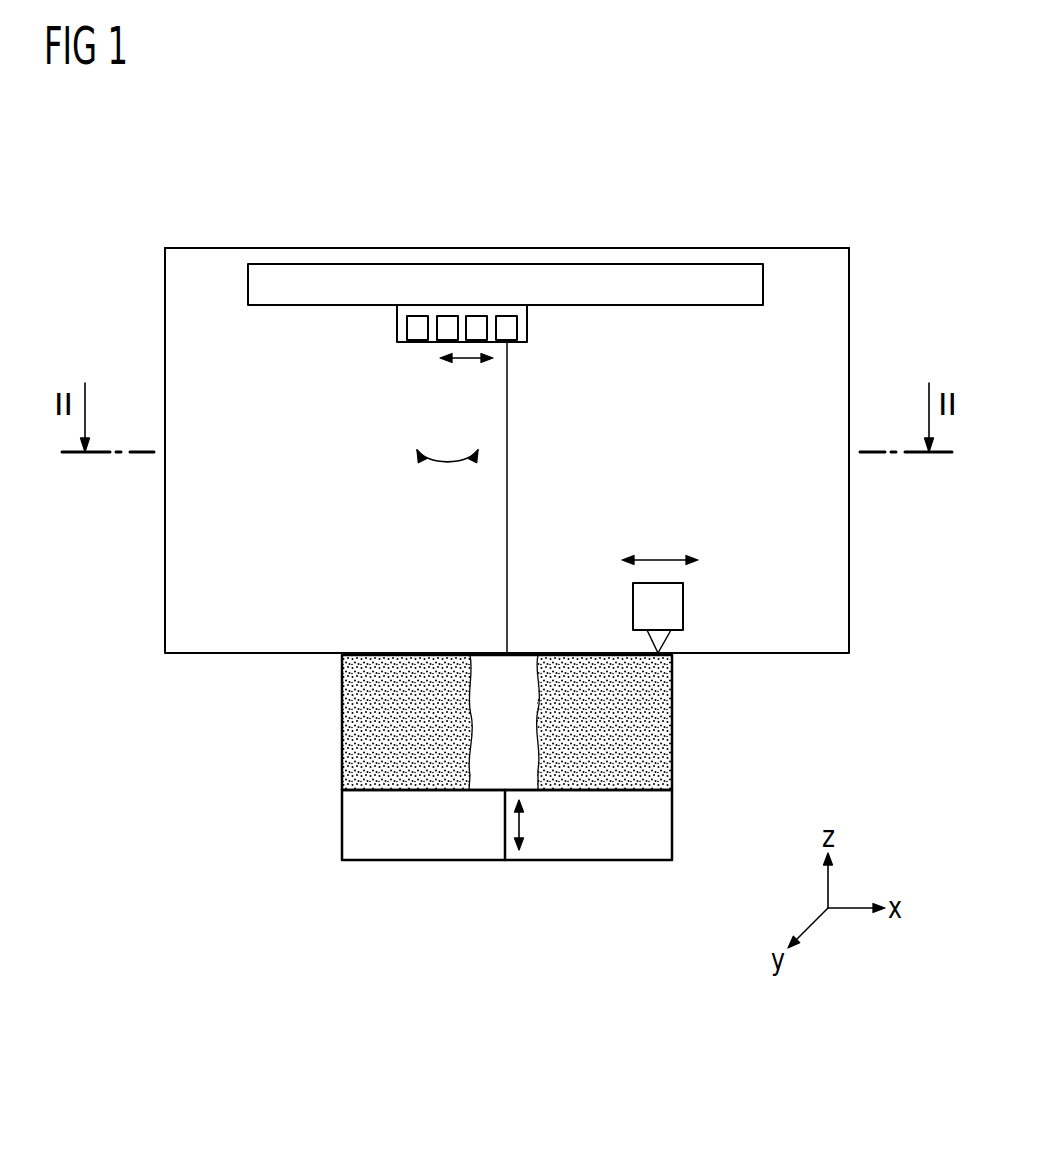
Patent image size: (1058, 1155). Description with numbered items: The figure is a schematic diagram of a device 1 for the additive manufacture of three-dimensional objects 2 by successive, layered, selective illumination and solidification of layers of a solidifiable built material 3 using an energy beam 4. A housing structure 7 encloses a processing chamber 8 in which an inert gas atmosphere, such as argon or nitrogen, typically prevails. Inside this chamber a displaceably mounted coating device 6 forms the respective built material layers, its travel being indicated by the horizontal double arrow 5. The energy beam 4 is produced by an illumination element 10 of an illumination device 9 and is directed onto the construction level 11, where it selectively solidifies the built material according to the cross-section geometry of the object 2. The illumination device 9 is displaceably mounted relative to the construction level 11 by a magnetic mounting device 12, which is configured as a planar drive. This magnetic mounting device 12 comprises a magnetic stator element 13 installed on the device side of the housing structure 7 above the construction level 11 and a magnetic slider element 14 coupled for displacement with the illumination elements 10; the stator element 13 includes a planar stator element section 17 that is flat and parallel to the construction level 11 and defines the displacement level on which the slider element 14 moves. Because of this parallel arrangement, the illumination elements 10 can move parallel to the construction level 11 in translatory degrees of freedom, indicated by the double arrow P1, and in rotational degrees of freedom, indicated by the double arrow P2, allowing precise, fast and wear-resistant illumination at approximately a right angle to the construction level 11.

The device 1 is at (680, 125).
The three-dimensional object 2 is at (480, 728).
The solidifiable built material 3 is at (660, 760).
The energy beam 4 is at (507, 537).
The horizontal double arrow 5 is at (664, 556).
The coating device 6 is at (683, 608).
The housing structure 7 is at (850, 568).
The processing chamber 8 is at (735, 248).
The illumination device 9 is at (510, 345).
The illumination element 10 is at (417, 342).
The construction level 11 is at (487, 648).
The magnetic motion and mounting device 12 is at (660, 340).
The magnetic stator element 13 is at (727, 307).
The magnetic slider element 14 is at (532, 329).
The planar stator element section 17 is at (328, 307).
The double arrow P1 is at (470, 362).
The double arrow P2 is at (445, 479).